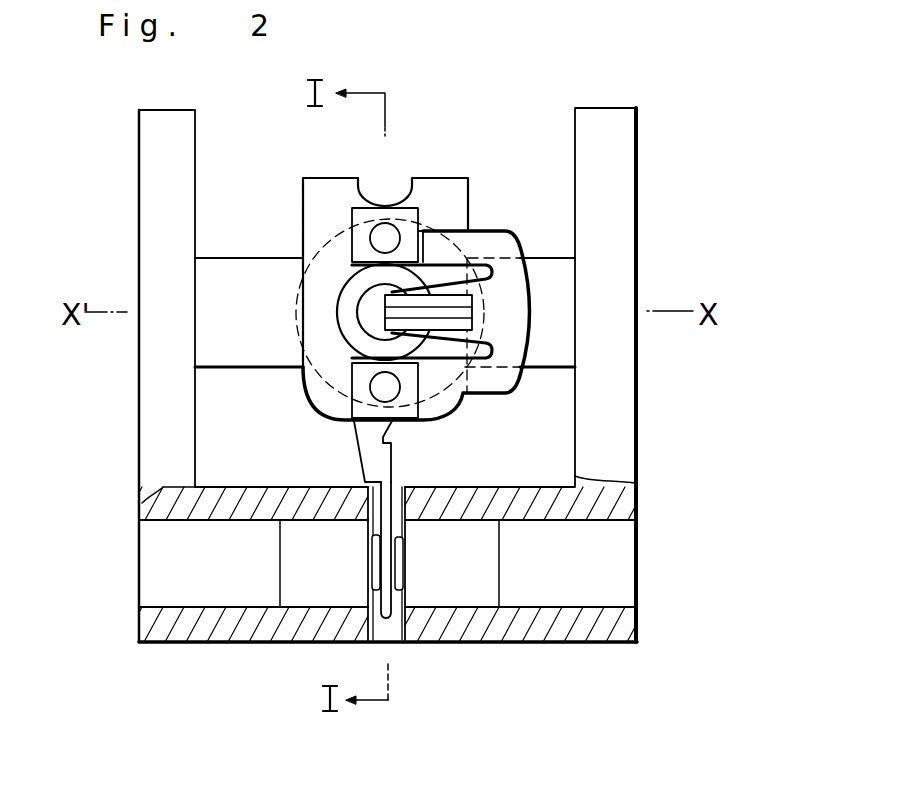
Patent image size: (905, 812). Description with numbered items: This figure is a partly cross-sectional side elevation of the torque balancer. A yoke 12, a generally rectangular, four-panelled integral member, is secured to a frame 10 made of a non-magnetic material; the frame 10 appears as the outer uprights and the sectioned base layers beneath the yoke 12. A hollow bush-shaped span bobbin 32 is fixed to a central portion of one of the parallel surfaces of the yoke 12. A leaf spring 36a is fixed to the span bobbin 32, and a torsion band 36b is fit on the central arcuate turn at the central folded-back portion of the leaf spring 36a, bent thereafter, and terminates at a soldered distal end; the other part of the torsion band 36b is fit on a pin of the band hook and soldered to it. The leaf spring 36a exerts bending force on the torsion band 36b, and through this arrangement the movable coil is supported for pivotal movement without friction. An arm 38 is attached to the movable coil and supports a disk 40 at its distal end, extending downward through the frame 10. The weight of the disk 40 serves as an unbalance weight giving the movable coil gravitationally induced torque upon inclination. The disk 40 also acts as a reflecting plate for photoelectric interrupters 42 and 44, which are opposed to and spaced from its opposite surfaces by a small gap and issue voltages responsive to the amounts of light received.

The frame 10 is at (636, 503).
The yoke 12 is at (537, 257).
The span bobbin 32 is at (303, 213).
The leaf spring 36a is at (485, 231).
The torsion band 36b is at (440, 313).
The arm 38 is at (353, 430).
The disk 40 is at (393, 625).
The photoelectric interrupter 42 is at (298, 592).
The photoelectric interrupter 44 is at (462, 597).